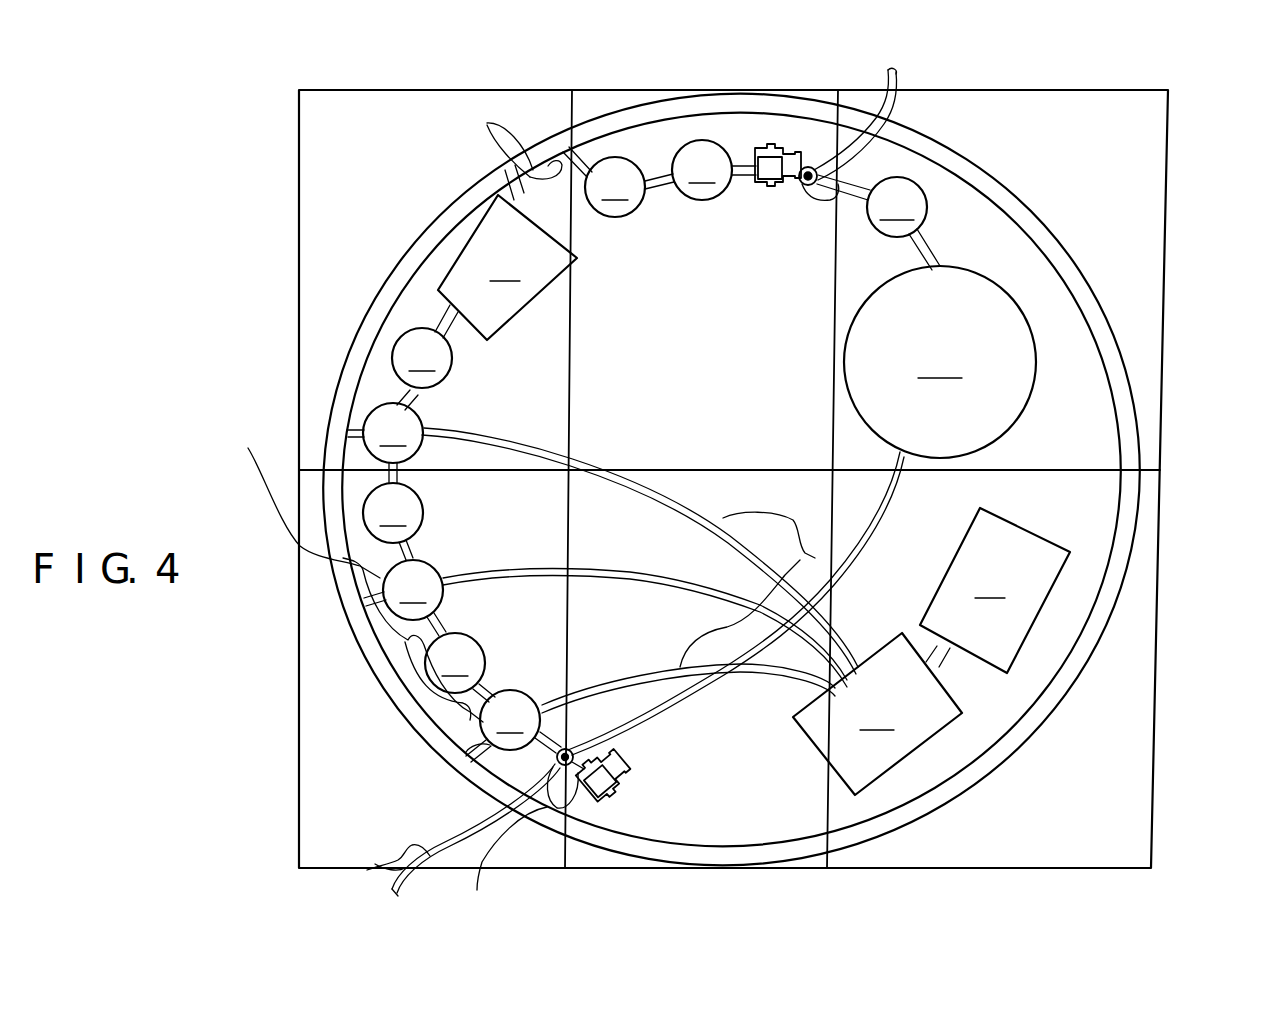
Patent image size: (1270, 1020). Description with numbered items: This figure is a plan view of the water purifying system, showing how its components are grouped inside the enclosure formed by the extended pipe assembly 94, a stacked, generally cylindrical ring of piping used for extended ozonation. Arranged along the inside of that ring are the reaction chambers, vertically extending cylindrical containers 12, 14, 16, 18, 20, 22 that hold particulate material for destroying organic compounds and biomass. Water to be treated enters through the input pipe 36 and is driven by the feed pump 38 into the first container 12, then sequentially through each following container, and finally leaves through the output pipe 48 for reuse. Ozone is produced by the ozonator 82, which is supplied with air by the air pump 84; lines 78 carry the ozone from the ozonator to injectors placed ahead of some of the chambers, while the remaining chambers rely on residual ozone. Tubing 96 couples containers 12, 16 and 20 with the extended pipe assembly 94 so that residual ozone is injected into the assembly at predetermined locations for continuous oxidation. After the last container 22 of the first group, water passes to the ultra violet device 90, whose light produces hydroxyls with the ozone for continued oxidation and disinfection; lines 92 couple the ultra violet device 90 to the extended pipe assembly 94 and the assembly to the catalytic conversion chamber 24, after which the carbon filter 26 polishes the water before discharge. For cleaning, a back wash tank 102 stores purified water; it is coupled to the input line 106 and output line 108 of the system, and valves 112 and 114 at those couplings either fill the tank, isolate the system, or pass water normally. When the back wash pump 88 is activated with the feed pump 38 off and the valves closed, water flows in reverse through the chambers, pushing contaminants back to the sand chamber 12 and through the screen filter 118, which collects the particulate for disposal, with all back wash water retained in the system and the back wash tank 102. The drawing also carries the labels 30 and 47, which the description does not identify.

The container 12 is at (513, 726).
The container 14 is at (460, 667).
The container 16 is at (405, 598).
The container 18 is at (393, 521).
The container 20 is at (385, 436).
The container 22 is at (425, 346).
The catalytic conversion chamber 24 is at (618, 182).
The carbon filter 26 is at (714, 170).
The housing 30 is at (860, 92).
The input pipe 36 is at (367, 870).
The feed pump 38 is at (588, 784).
The electrode cable 47 is at (415, 668).
The output pipe 48 is at (813, 167).
The lines 78 is at (700, 580).
The ozonator 82 is at (877, 714).
The air pump 84 is at (995, 590).
The back wash pump 88 is at (772, 148).
The ultra violet device 90 is at (507, 252).
The lines 92 is at (489, 124).
The extended pipe assembly 94 is at (1113, 345).
The tubing 96 is at (340, 452).
The back wash tank 102 is at (940, 362).
The input line 106 is at (932, 250).
The output line 108 is at (893, 495).
The valve 112 is at (482, 832).
The valve 114 is at (897, 120).
The screen filter 118 is at (872, 206).